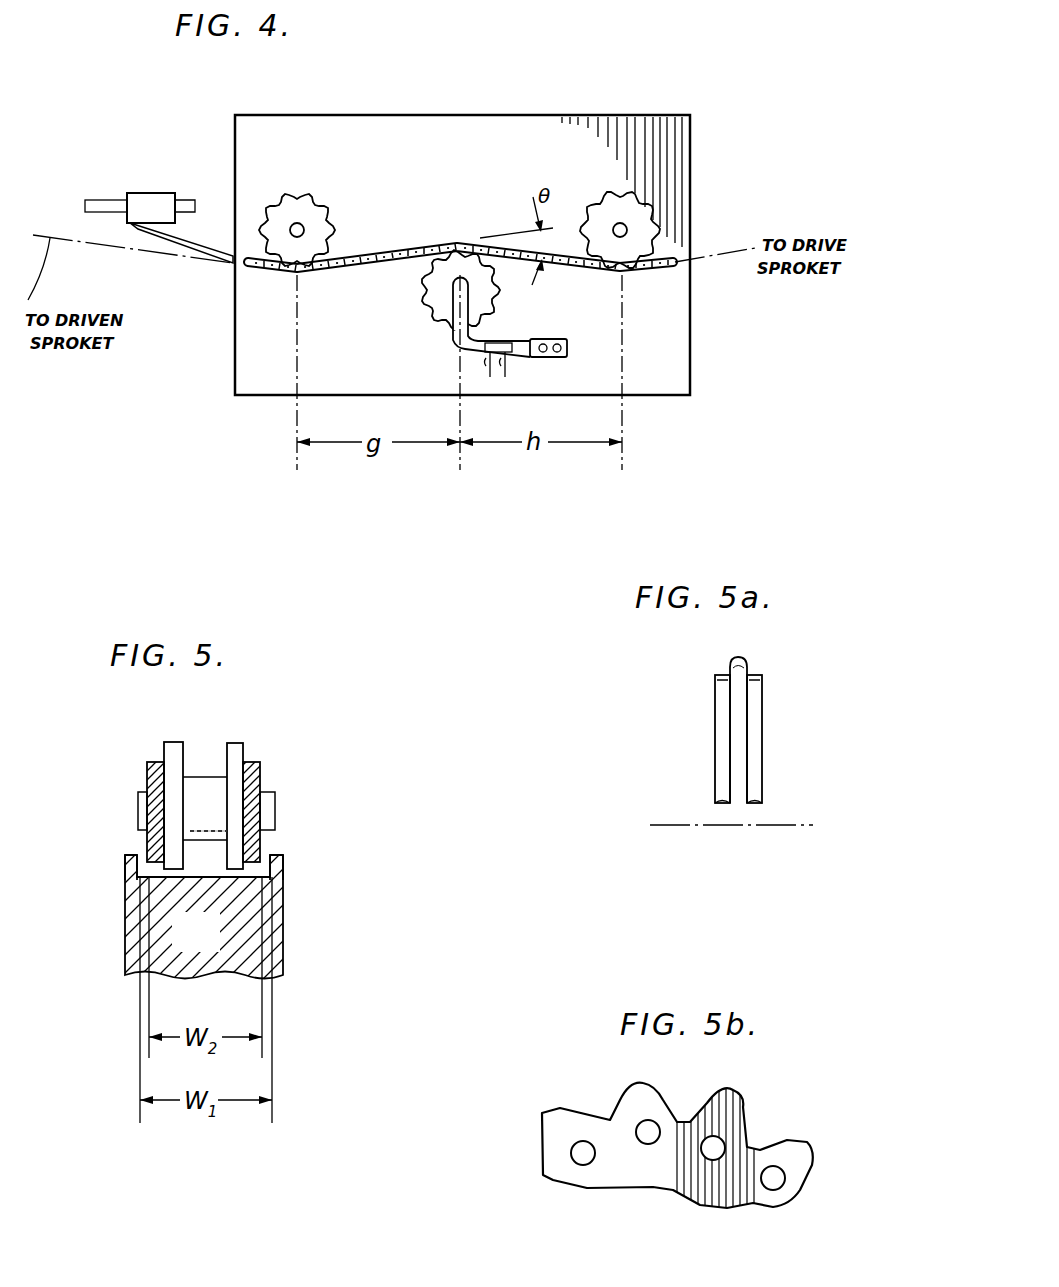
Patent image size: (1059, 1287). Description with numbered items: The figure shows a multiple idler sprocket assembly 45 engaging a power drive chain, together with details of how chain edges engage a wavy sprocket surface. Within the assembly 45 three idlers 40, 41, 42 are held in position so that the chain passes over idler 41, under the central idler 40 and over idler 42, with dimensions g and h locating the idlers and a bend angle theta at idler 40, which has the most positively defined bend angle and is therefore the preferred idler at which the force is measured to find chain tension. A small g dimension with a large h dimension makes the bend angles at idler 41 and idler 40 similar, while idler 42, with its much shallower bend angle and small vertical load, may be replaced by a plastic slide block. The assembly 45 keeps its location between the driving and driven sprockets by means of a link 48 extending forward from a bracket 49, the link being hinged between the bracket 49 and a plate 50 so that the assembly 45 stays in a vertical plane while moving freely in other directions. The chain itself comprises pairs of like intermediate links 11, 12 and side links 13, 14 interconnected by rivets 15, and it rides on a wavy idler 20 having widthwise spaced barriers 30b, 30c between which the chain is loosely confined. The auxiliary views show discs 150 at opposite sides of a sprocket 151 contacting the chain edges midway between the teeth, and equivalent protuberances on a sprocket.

In FIG. 4, the assembly 45 is at (582, 108).
In FIG. 4, the plate 50 is at (422, 182).
In FIG. 4, the idler 41 is at (297, 210).
In FIG. 4, the idler 42 is at (625, 210).
In FIG. 4, the idler 40 is at (433, 290).
In FIG. 4, the bracket 49 is at (100, 200).
In FIG. 4, the link 48 is at (193, 233).
In FIG. 5, the intermediate link 11 is at (163, 748).
In FIG. 5, the intermediate link 12 is at (242, 740).
In FIG. 5, the side link 13 is at (147, 773).
In FIG. 5, the side link 14 is at (260, 770).
In FIG. 5, the rivet 15 is at (275, 808).
In FIG. 5, the guide rail 20 is at (211, 946).
In FIG. 5, the barrier 30b is at (127, 862).
In FIG. 5, the barrier 30c is at (287, 862).
In FIG. 5A, the disc 150 is at (715, 762).
In FIG. 5A, the sprocket 151 is at (738, 702).